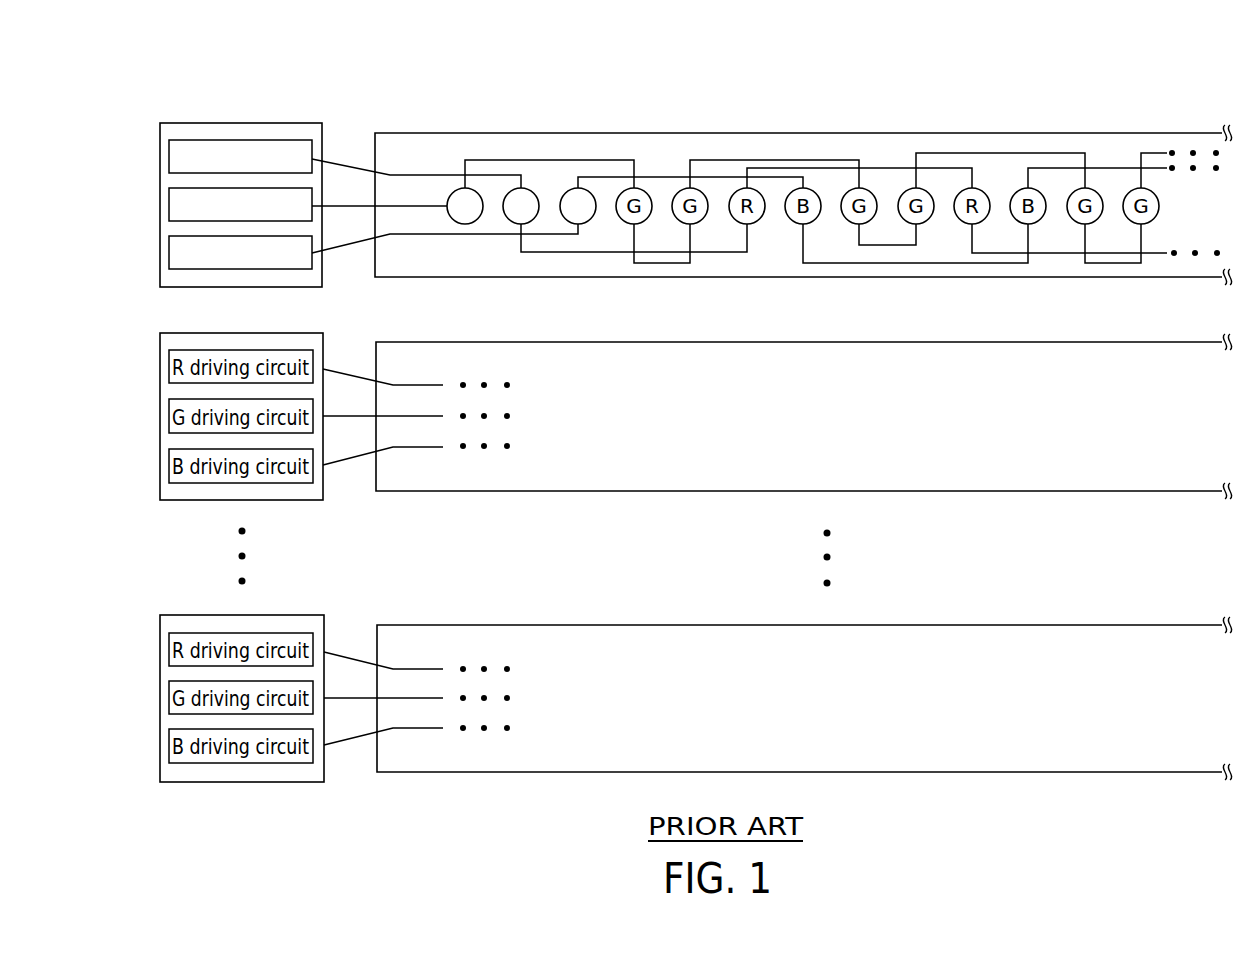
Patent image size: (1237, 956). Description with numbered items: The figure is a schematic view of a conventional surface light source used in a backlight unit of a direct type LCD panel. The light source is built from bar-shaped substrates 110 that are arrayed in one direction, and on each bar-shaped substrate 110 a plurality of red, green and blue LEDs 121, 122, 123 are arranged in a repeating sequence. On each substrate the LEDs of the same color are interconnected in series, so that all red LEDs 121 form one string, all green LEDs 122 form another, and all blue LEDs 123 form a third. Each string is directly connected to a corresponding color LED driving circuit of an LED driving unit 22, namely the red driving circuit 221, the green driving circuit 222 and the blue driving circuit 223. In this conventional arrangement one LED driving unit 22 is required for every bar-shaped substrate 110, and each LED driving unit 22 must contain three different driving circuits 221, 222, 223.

The LED driving unit 22 is at (235, 128).
The red LED driving circuit 221 is at (172, 140).
The green LED driving circuit 222 is at (170, 197).
The blue LED driving circuit 223 is at (170, 247).
The bar-shaped substrate 110 is at (712, 140).
The red LED 121 is at (536, 188).
The green LED 122 is at (473, 188).
The blue LED 123 is at (594, 188).